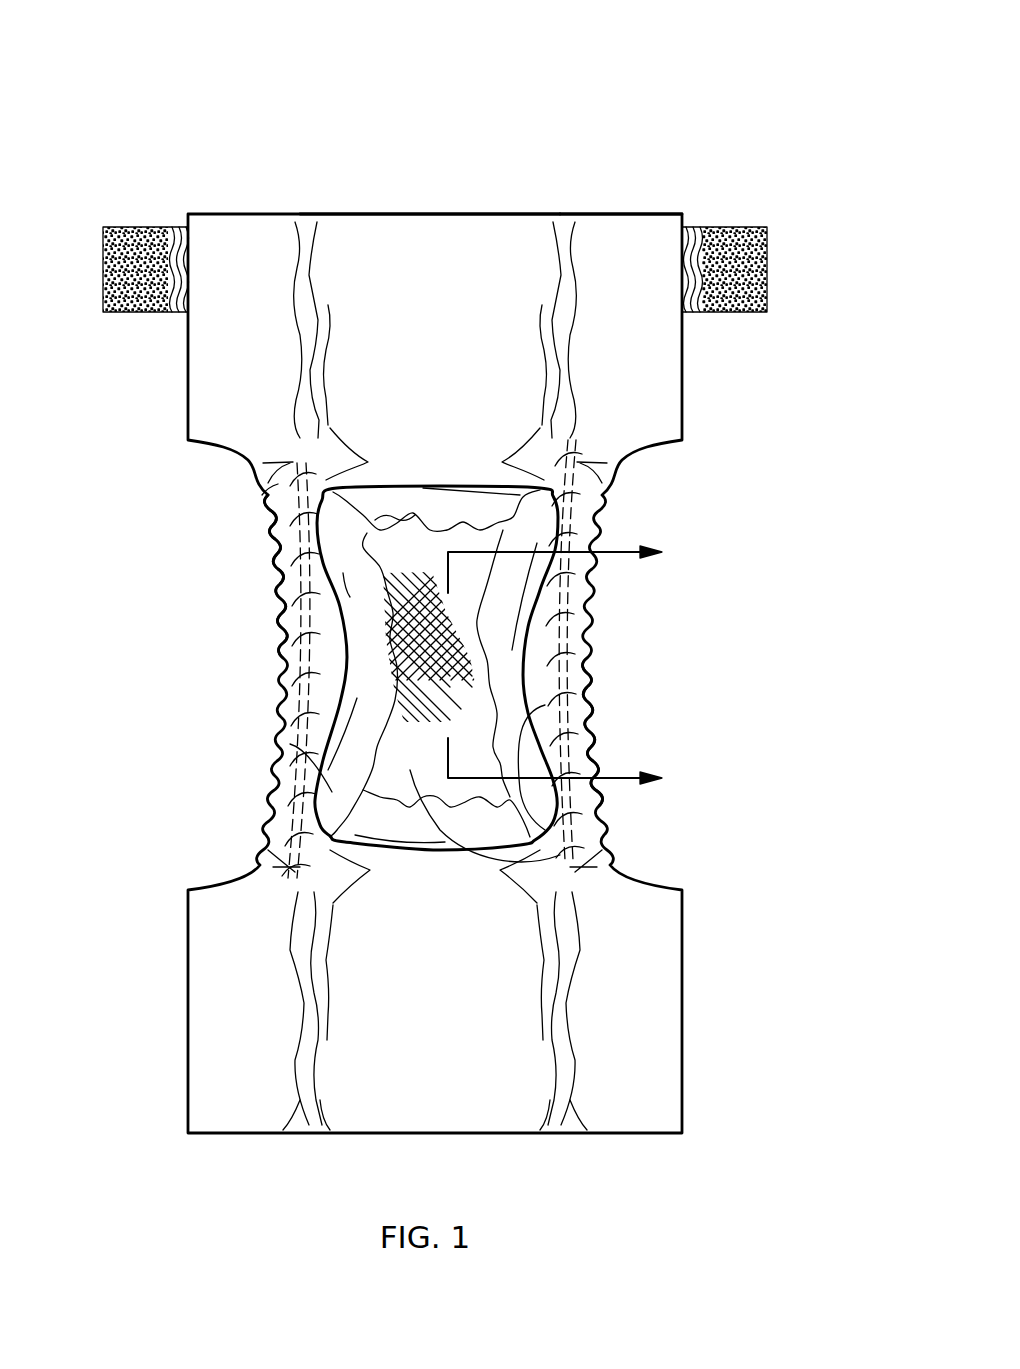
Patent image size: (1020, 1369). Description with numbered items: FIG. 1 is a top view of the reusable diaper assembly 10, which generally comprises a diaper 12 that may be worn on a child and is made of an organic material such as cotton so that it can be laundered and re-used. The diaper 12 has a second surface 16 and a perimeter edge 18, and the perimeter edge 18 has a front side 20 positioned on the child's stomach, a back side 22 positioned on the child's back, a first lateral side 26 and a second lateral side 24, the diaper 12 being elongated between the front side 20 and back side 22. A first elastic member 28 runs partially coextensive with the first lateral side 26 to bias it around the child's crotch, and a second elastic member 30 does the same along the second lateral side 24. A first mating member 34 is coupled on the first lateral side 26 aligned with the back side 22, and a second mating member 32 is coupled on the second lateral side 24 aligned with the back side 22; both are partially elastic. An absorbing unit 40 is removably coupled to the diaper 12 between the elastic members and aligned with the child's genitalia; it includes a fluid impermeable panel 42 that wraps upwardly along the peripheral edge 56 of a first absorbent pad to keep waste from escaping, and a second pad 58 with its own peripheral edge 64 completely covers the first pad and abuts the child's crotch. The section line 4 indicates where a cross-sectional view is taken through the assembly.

The reusable diaper assembly 10 is at (214, 110).
The diaper 12 is at (300, 214).
The second surface 16 is at (512, 252).
The perimeter edge 18 is at (389, 214).
The front side 20 is at (600, 1134).
The back side 22 is at (628, 214).
The second lateral side 24 is at (280, 620).
The first lateral side 26 is at (590, 656).
The first elastic member 28 is at (278, 578).
The second elastic member 30 is at (620, 462).
The second mating member 32 is at (138, 228).
The first mating member 34 is at (728, 228).
The absorbing unit 40 is at (268, 493).
The panel 42 is at (290, 744).
The peripheral edge 56 is at (545, 705).
The second pad 58 is at (560, 855).
The peripheral edge 64 is at (588, 606).
The section line 4- 4 is at (574, 666).